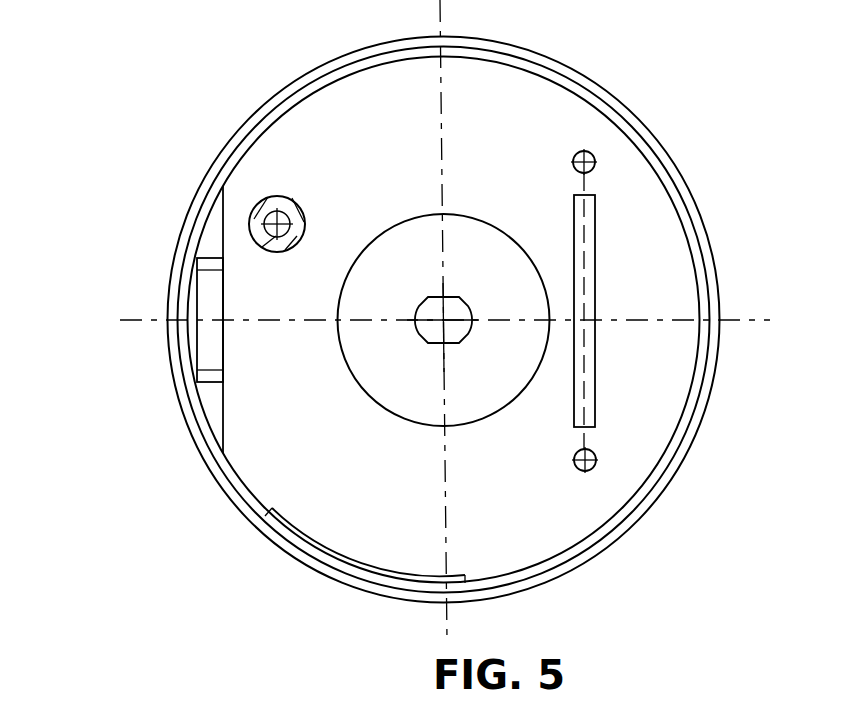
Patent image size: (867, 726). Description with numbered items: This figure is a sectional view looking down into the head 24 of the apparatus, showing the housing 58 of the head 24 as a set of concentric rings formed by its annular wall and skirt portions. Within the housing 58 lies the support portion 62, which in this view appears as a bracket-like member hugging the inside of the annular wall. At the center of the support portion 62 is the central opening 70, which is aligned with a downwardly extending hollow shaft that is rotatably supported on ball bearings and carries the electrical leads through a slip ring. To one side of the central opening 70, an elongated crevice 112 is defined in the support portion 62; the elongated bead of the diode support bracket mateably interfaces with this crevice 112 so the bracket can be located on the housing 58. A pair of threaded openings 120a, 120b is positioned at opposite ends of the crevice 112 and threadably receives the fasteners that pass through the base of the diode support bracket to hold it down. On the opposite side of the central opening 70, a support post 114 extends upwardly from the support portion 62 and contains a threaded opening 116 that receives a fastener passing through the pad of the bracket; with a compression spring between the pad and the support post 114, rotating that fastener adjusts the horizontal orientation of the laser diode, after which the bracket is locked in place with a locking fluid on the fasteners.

The head 24 is at (407, 320).
The housing 58 is at (469, 320).
The support portion 62 is at (313, 463).
The central opening 70 is at (387, 438).
The crevice 112 is at (682, 311).
The support post 114 is at (191, 146).
The threaded opening 116 is at (185, 208).
The threaded opening 120a is at (670, 113).
The threaded opening 120b is at (668, 527).